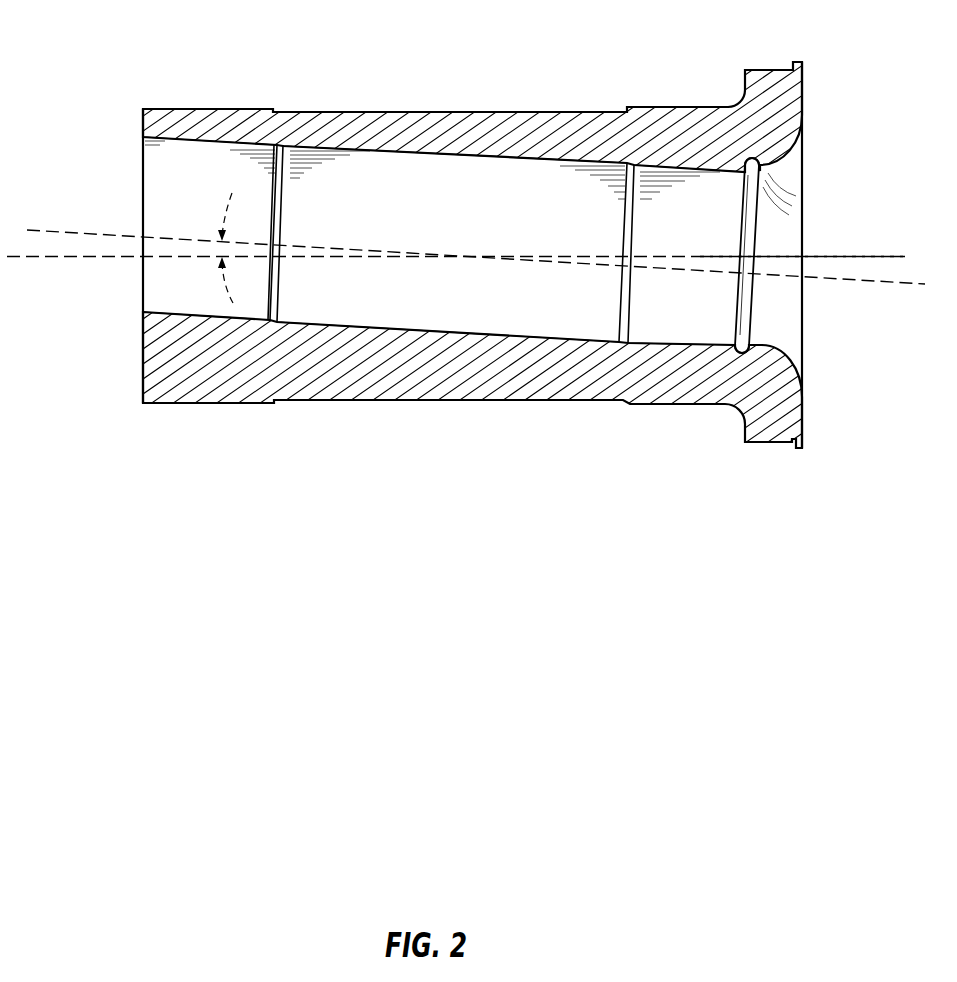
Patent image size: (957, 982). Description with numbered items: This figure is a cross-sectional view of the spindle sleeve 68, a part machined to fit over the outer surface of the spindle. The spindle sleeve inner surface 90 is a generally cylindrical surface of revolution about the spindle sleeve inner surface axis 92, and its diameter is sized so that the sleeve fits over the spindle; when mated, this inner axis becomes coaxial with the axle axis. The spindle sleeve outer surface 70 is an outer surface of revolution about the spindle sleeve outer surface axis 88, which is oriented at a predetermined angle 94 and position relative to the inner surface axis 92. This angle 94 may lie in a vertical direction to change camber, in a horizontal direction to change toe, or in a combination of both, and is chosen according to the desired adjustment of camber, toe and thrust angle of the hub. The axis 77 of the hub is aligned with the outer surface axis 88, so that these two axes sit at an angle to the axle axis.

The spindle sleeve 68 is at (470, 456).
The spindle sleeve outer surface 70 is at (433, 403).
The axis of the hub 77 is at (855, 256).
The spindle sleeve outer surface axis 88 is at (62, 257).
The spindle sleeve inner surface 90 is at (306, 320).
The spindle sleeve inner surface axis 92 is at (58, 232).
The angle 94 is at (223, 215).